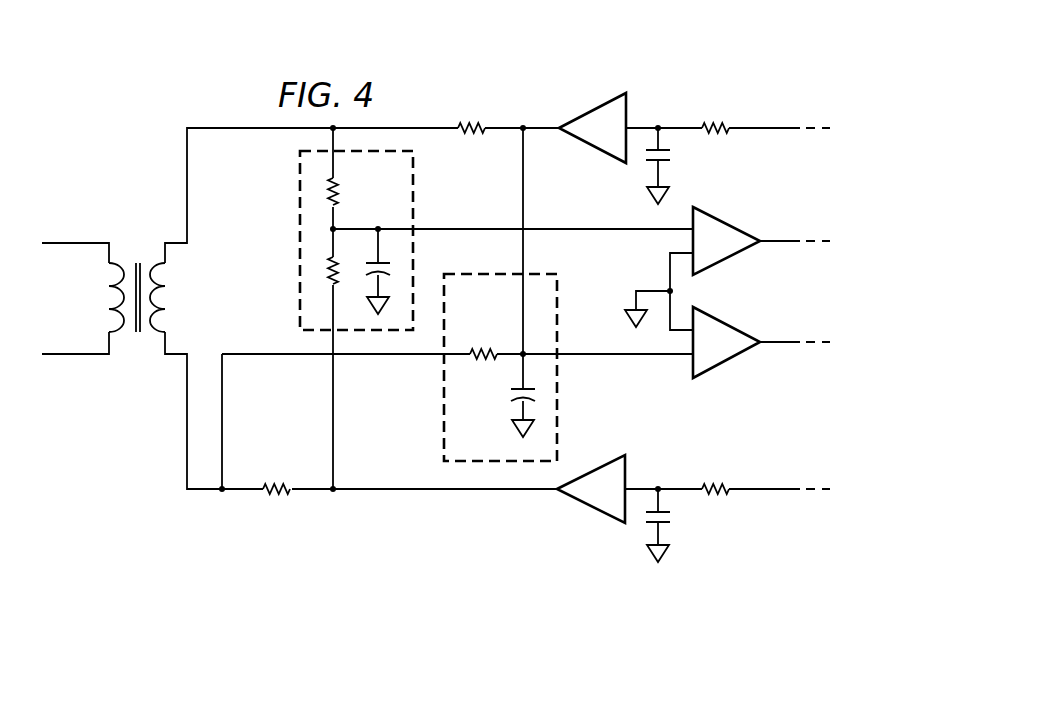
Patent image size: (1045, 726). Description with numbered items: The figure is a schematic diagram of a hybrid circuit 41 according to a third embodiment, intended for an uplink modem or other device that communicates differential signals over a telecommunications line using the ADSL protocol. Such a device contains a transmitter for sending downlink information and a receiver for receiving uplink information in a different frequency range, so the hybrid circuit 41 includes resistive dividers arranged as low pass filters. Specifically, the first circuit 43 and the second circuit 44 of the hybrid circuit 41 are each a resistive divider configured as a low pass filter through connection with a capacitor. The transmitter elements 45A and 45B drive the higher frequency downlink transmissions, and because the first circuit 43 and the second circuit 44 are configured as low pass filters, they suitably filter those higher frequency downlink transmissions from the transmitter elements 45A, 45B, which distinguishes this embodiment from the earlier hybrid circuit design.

The hybrid circuit 41 is at (216, 64).
The first circuit 43 is at (300, 218).
The second circuit 44 is at (444, 412).
The transmitter element 45A is at (595, 112).
The transmitter element 45B is at (590, 510).